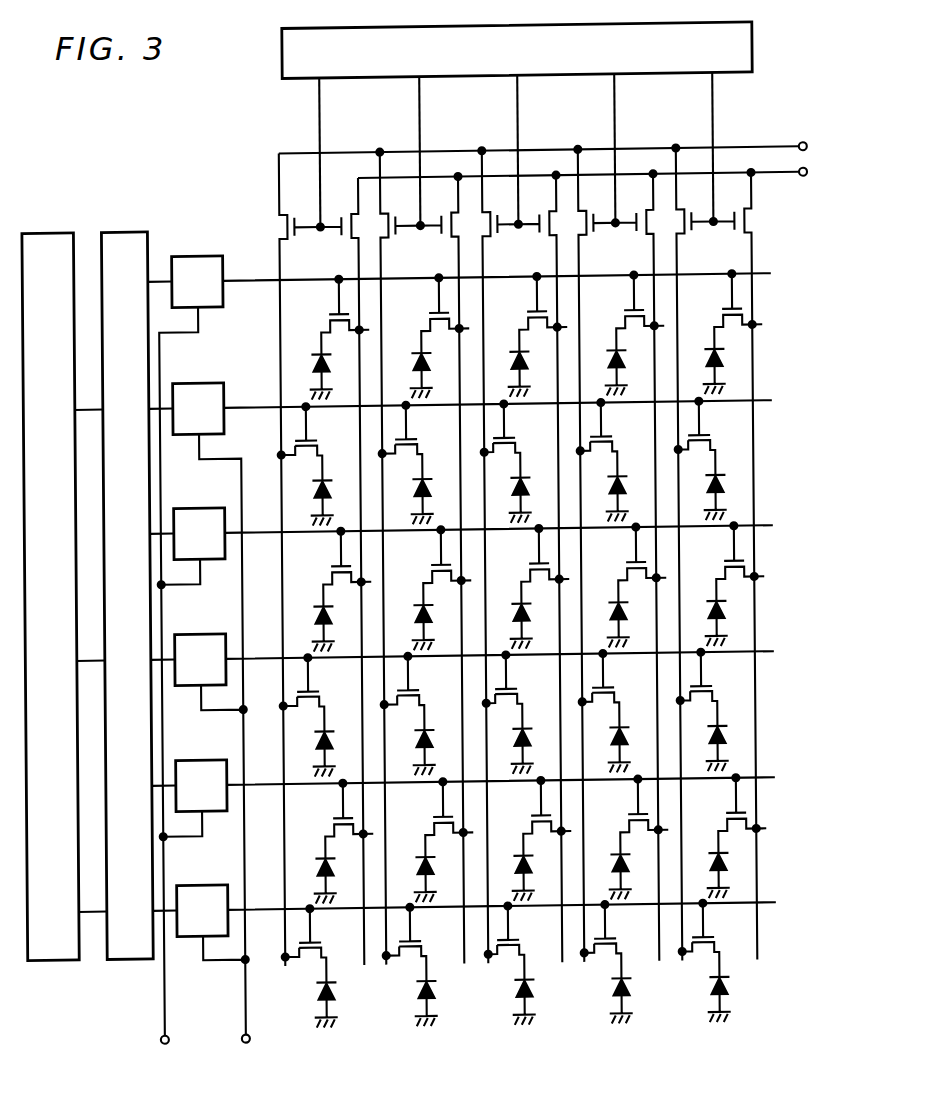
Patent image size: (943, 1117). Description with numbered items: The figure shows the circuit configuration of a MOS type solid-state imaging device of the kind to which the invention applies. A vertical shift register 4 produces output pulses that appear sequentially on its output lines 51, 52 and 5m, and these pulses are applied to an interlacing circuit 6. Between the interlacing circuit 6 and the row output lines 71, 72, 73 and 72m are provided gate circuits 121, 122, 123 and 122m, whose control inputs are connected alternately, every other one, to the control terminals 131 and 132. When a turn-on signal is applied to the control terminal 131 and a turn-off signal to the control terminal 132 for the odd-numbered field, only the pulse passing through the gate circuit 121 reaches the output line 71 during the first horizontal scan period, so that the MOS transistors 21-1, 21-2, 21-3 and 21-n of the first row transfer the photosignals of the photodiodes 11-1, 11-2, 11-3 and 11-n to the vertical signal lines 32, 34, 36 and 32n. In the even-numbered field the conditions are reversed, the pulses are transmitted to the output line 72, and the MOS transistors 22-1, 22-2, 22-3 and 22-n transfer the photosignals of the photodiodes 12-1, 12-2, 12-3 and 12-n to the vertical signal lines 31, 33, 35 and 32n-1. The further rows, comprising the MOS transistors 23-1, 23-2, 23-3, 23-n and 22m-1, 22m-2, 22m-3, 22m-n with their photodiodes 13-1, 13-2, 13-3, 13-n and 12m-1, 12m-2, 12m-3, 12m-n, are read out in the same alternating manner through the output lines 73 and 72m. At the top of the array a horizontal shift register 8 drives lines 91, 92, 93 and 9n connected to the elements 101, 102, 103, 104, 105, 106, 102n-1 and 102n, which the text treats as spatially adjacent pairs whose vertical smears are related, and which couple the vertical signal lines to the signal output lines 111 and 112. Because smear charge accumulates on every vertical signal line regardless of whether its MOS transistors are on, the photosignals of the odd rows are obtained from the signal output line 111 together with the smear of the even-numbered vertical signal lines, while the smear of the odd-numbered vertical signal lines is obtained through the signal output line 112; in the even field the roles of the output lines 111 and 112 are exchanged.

The horizontal shift register 8 is at (757, 49).
The vertical shift register 4 is at (50, 226).
The interlacing circuit 6 is at (127, 226).
The output line 51 is at (89, 403).
The output line 52 is at (90, 654).
The output line 5m is at (88, 908).
The gate circuit 121 is at (197, 251).
The gate circuit 122 is at (199, 378).
The gate circuit 123 is at (199, 503).
The gate circuit 122m is at (199, 880).
The output line 71 is at (246, 276).
The output line 72 is at (246, 403).
The output line 73 is at (248, 528).
The output line 72m is at (250, 905).
The control terminal 131 is at (157, 1032).
The control terminal 132 is at (238, 1032).
The signal output line 111 is at (765, 178).
The signal output line 112 is at (774, 149).
The horizontal shift register output line 91 is at (324, 100).
The horizontal shift register output line 92 is at (424, 100).
The horizontal shift register output line 93 is at (522, 100).
The horizontal shift register output line 9n is at (717, 98).
The vertical signal line 101 is at (296, 213).
The vertical signal line 102 is at (343, 213).
The vertical signal line 103 is at (397, 213).
The vertical signal line 104 is at (443, 213).
The vertical signal line 105 is at (498, 213).
The vertical signal line 106 is at (541, 213).
The vertical signal line 102n-1 is at (684, 216).
The vertical signal line 102n is at (749, 222).
The vertical signal line 31 is at (283, 275).
The vertical signal line 32 is at (361, 253).
The vertical signal line 33 is at (384, 275).
The vertical signal line 34 is at (460, 252).
The vertical signal line 35 is at (485, 275).
The vertical signal line 36 is at (558, 265).
The vertical signal line 32n-1 is at (683, 266).
The vertical signal line 32n is at (757, 266).
The MOS transistor 21-1 is at (338, 305).
The MOS transistor 21-2 is at (439, 305).
The MOS transistor 21-3 is at (537, 305).
The MOS transistor 21-n is at (733, 305).
The MOS transistor 22-1 is at (325, 432).
The MOS transistor 22-2 is at (425, 432).
The MOS transistor 22-3 is at (523, 432).
The MOS transistor 22-n is at (718, 432).
The MOS transistor 23-1 is at (338, 557).
The MOS transistor 23-2 is at (439, 557).
The MOS transistor 23-3 is at (537, 557).
The MOS transistor 23-n is at (733, 557).
The MOS transistor 22m-1 is at (305, 944).
The MOS transistor 22m-2 is at (424, 940).
The MOS transistor 22m-3 is at (522, 940).
The MOS transistor 22m-n is at (717, 940).
The photodiode 11-1 is at (312, 358).
The photodiode 11-2 is at (412, 358).
The photodiode 11-3 is at (511, 358).
The photodiode 11-n is at (706, 358).
The photodiode 12-1 is at (333, 477).
The photodiode 12-2 is at (433, 477).
The photodiode 12-3 is at (531, 477).
The photodiode 12-n is at (726, 477).
The photodiode 13-1 is at (312, 610).
The photodiode 13-2 is at (412, 610).
The photodiode 13-3 is at (511, 610).
The photodiode 13-n is at (706, 610).
The photodiode 12m-1 is at (315, 992).
The photodiode 12m-2 is at (416, 984).
The photodiode 12m-3 is at (516, 1004).
The photodiode 12m-n is at (709, 984).